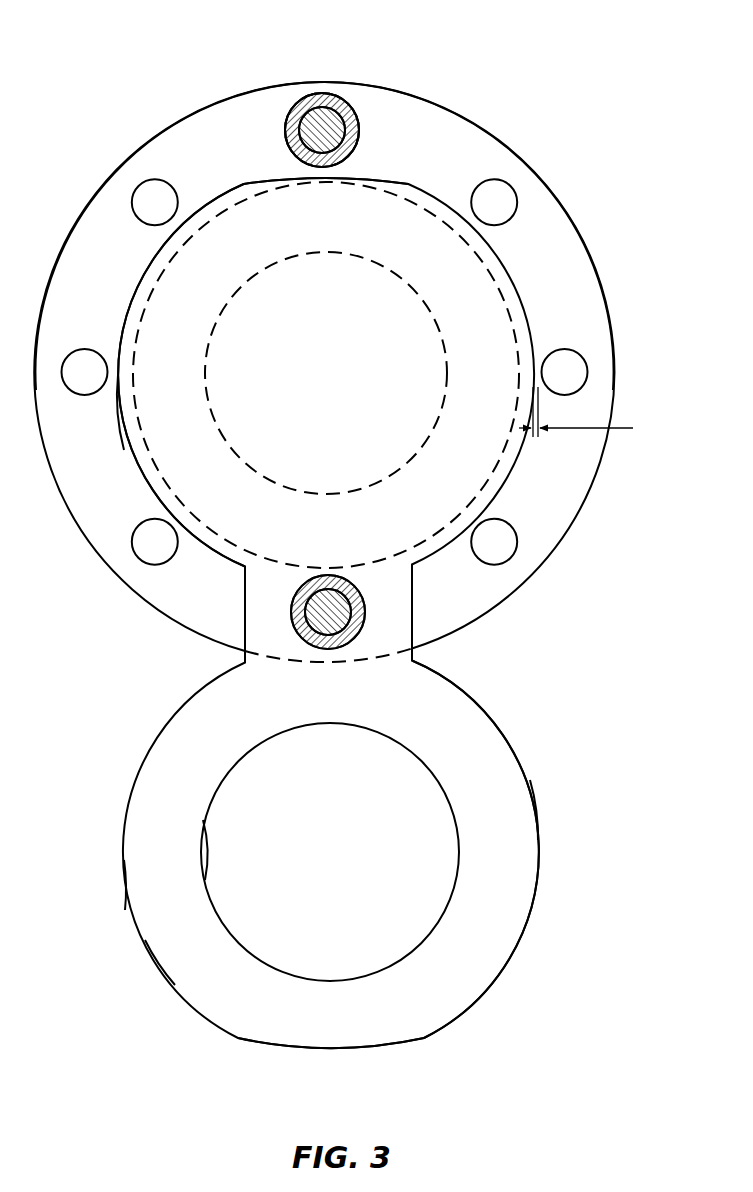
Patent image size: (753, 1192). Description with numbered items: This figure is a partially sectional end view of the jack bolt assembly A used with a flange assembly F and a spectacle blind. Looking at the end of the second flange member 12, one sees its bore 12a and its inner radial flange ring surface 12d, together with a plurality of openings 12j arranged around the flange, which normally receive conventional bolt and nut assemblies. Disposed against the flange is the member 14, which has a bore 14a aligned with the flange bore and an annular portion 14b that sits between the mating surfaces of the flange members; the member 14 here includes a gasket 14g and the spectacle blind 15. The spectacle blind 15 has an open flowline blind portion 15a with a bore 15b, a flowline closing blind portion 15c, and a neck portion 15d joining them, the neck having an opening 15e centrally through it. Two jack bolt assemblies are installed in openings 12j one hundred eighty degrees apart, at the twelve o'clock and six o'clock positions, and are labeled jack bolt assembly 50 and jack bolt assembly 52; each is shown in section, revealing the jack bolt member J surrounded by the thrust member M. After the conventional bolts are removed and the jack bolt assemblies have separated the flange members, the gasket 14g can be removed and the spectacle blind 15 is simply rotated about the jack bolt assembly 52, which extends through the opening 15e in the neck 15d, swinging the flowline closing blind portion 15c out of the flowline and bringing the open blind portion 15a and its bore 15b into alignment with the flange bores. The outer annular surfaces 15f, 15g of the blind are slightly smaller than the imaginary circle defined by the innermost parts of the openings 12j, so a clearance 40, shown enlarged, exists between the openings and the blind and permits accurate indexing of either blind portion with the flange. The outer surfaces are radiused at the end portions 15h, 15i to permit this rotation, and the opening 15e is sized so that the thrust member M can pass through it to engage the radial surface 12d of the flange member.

The second flange member 12 is at (601, 262).
The bore 12a is at (205, 372).
The inner radial flange ring surface 12d is at (450, 133).
The openings 12j is at (140, 193).
The member 14 is at (524, 757).
The bore 14a is at (458, 841).
The annular portion 14b is at (523, 808).
The gasket 14g is at (147, 455).
The spectacle blind 15 is at (524, 947).
The open flowline blind portion 15a is at (125, 887).
The bore 15b is at (207, 833).
The flowline closing blind portion 15c is at (122, 425).
The neck portion 15d is at (245, 610).
The opening 15e is at (312, 643).
The outer annular surface 15f is at (122, 328).
The outer annular surface 15g is at (155, 965).
The end portion 15h is at (252, 182).
The end portion 15i is at (292, 1048).
The clearance 40 is at (593, 414).
The jack bolt assembly 50 is at (296, 98).
The jack bolt assembly 52 is at (368, 610).
The jack bolt assembly A is at (321, 91).
The flange assembly F is at (142, 140).
The jack bolt member J is at (334, 132).
The thrust member M is at (354, 101).